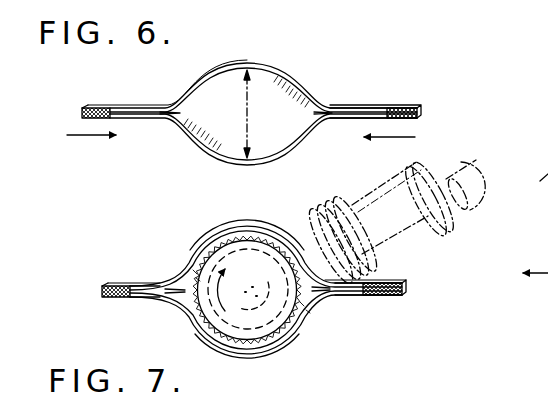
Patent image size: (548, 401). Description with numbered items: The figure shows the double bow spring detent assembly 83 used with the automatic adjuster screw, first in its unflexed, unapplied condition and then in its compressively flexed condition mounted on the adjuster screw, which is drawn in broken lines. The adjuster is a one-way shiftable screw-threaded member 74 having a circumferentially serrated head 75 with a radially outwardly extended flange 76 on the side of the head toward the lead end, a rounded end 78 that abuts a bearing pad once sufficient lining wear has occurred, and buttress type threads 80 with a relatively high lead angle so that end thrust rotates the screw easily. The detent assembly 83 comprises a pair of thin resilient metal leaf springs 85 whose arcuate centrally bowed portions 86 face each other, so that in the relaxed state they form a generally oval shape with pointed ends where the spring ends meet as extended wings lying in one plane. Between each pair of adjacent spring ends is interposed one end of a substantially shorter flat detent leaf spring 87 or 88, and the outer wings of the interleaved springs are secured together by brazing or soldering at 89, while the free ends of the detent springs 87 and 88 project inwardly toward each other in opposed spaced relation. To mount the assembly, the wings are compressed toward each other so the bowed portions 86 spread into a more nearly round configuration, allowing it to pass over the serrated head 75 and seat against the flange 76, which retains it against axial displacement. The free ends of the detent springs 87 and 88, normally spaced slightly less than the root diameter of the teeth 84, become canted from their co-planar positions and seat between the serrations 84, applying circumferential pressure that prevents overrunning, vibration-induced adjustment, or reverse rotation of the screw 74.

In FIG. 7, the screw-threaded member 74 is at (434, 230).
In FIG. 7, the serrated head 75 is at (233, 260).
In FIG. 7, the flange 76 is at (249, 218).
In FIG. 7, the rounded end 78 is at (482, 160).
In FIG. 7, the threads 80 is at (335, 222).
In FIG. 6, the double bow spring detent assembly 83 is at (182, 87).
In FIG. 7, the double bow spring detent assembly 83 is at (158, 270).
In FIG. 7, the serrations 84 is at (203, 283).
In FIG. 6, the leaf springs 85 is at (344, 108).
In FIG. 7, the leaf springs 85 is at (167, 298).
In FIG. 6, the bowed portions 86 is at (264, 66).
In FIG. 7, the bowed portions 86 is at (268, 232).
In FIG. 6, the detent leaf spring 87 is at (183, 110).
In FIG. 7, the detent leaf spring 87 is at (188, 292).
In FIG. 6, the detent leaf spring 88 is at (313, 112).
In FIG. 7, the detent leaf spring 88 is at (330, 298).
In FIG. 6, the secured wing ends 89 is at (85, 108).
In FIG. 7, the secured wing ends 89 is at (113, 297).